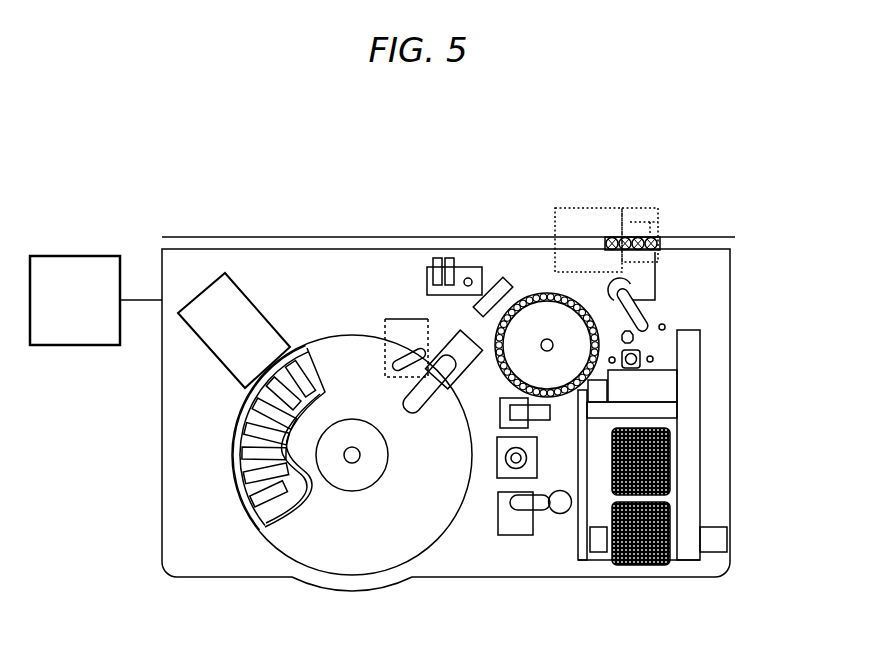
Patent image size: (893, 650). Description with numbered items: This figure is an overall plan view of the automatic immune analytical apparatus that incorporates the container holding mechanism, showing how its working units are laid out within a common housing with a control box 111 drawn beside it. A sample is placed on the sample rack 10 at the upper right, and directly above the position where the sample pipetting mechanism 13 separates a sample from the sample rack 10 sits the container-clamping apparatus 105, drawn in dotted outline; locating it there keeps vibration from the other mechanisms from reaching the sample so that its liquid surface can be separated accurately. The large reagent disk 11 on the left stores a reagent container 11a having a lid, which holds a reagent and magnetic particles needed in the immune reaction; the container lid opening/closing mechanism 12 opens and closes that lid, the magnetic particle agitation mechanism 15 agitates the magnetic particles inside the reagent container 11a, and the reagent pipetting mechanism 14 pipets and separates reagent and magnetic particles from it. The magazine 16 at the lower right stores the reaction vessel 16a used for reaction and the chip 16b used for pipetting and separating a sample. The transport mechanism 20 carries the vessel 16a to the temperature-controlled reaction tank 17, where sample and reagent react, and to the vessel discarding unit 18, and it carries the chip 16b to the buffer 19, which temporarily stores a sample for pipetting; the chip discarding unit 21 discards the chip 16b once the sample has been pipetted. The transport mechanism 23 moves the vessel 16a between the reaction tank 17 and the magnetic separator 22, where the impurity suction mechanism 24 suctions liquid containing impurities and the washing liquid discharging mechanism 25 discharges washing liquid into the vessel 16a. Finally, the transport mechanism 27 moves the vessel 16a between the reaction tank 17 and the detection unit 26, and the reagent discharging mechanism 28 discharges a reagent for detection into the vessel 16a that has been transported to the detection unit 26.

The control unit 111 is at (96, 300).
The container lid opening/closing mechanism 12 is at (197, 295).
The reagent disk 11 is at (322, 338).
The reagent container having a lid 11a is at (298, 348).
The magnetic particle agitation mechanism 15 is at (387, 320).
The reagent pipetting mechanism 14 is at (437, 362).
The impurity suction mechanism 24 is at (438, 257).
The washing liquid discharging mechanism 25 is at (449, 257).
The magnetic separator 22 is at (469, 277).
The transport mechanism 23 is at (503, 276).
The reaction tank 17 is at (545, 292).
The container-clamping apparatus 105 is at (591, 208).
The sample rack 10 is at (623, 248).
The sample pipetting mechanism 13 is at (657, 252).
The chip discarding unit 21 is at (633, 334).
The buffer 19 is at (665, 326).
The vessel discarding unit 18 is at (654, 359).
The transport mechanism 20 is at (610, 386).
The magazine 16 is at (638, 535).
The reaction vessel 16a is at (620, 566).
The chip 16b is at (652, 566).
The transport mechanism 27 is at (501, 412).
The detection unit 26 is at (497, 478).
The reagent discharging mechanism 28 is at (517, 535).